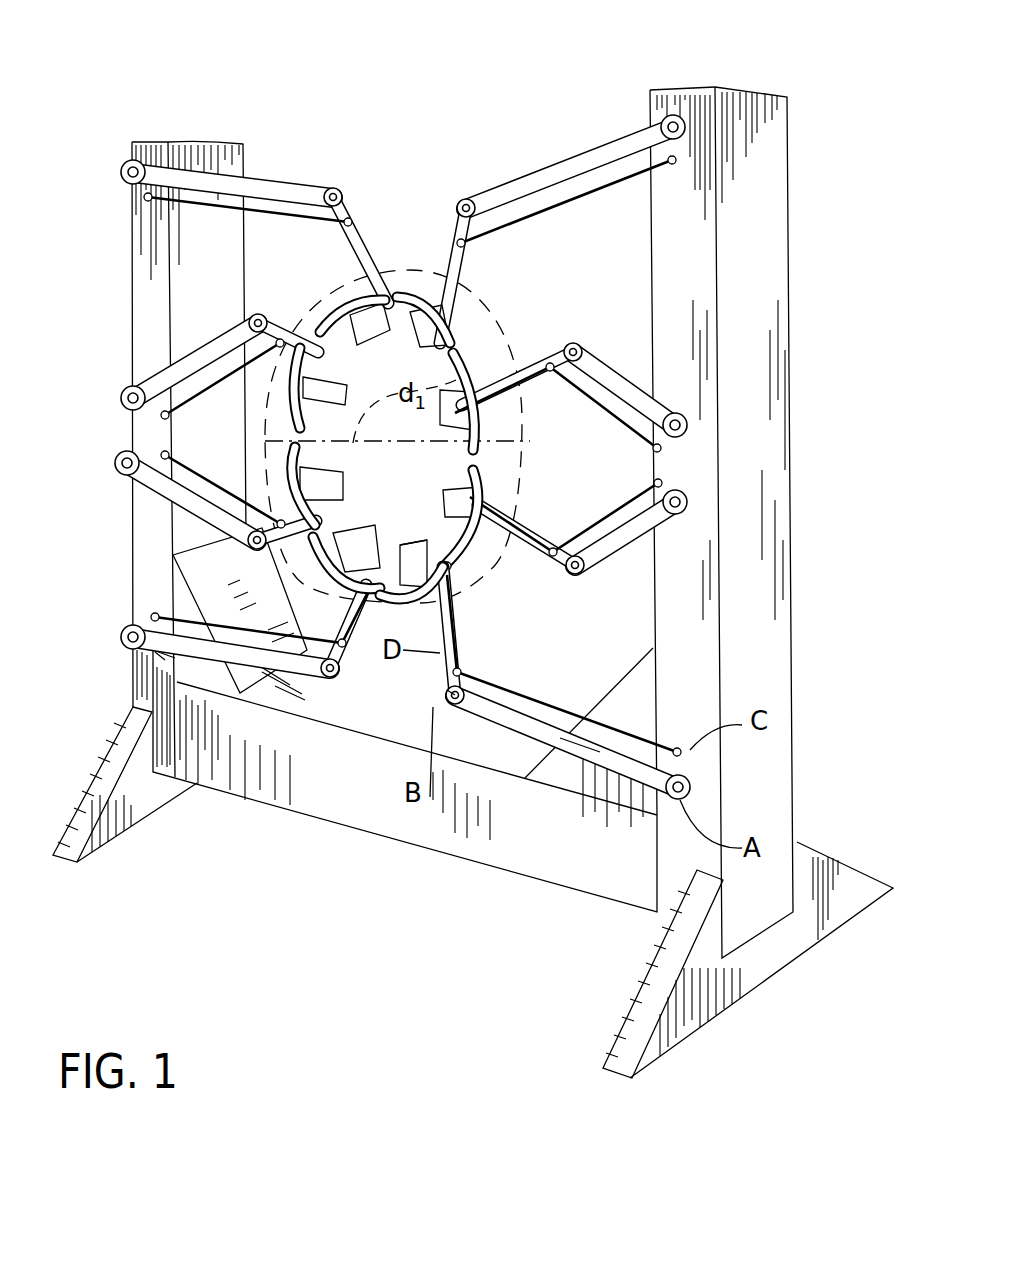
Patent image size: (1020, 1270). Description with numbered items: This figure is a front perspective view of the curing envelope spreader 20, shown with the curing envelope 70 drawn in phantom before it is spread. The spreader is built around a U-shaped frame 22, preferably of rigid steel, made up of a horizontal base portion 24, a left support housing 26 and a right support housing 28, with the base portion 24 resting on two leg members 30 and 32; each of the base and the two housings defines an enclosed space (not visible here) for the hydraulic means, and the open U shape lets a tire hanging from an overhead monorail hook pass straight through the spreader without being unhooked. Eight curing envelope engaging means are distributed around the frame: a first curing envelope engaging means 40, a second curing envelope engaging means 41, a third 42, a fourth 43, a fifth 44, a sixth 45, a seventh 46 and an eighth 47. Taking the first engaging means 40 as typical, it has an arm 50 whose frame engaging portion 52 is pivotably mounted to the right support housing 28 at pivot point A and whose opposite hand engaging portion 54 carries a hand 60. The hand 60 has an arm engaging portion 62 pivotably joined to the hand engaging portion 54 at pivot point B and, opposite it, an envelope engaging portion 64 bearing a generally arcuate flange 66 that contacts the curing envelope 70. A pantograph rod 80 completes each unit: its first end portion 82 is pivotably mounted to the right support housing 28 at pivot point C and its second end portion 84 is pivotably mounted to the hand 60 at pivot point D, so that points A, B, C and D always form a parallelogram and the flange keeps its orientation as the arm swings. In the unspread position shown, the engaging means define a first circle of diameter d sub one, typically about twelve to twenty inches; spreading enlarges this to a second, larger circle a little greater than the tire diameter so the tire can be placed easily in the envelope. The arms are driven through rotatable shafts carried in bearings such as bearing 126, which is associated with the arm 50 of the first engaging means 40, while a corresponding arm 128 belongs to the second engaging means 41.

The curing envelope spreader 20 is at (730, 84).
The U-shaped frame 22 is at (792, 235).
The horizontal base portion 24 is at (493, 850).
The left support housing 26 is at (135, 268).
The right support housing 28 is at (765, 362).
The leg member 30 is at (745, 986).
The leg member 32 is at (145, 802).
The first curing envelope engaging means 40 is at (544, 684).
The second curing envelope engaging means 41 is at (264, 678).
The third curing envelope engaging means 42 is at (555, 530).
The fourth curing envelope engaging means 43 is at (558, 340).
The fifth curing envelope engaging means 44 is at (572, 152).
The sixth curing envelope engaging means 45 is at (213, 470).
The seventh curing envelope engaging means 46 is at (265, 312).
The eighth curing envelope engaging means 47 is at (283, 170).
The arm 50 is at (583, 747).
The frame engaging portion 52 is at (694, 777).
The hand engaging portion 54 is at (468, 702).
The hand 60 is at (463, 637).
The arm engaging portion 62 is at (443, 700).
The envelope engaging portion 64 is at (452, 572).
The flange 66 is at (408, 550).
The curing envelope 70 is at (510, 447).
The pantograph rod 80 is at (560, 705).
The first end portion 82 is at (677, 750).
The second end portion 84 is at (467, 660).
The bearing 126 is at (135, 630).
The arm 128 is at (160, 657).